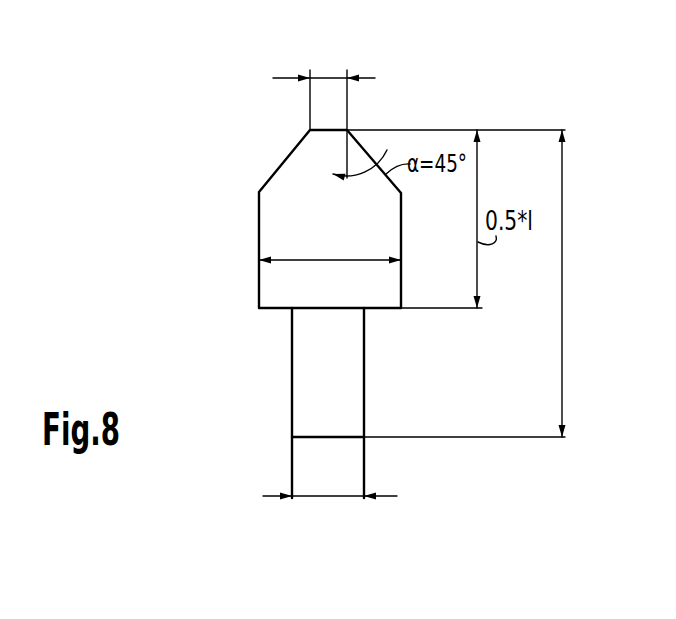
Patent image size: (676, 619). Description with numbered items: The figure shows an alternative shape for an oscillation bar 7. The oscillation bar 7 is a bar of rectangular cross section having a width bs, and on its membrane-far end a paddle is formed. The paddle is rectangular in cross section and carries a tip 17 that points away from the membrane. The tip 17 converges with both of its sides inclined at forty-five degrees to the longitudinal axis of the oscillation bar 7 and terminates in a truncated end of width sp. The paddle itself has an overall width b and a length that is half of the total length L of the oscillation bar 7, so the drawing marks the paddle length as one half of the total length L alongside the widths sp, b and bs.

The oscillation bar 7 is at (234, 295).
The tip 17 is at (268, 161).
The width of truncated end sp is at (330, 78).
The paddle width b is at (320, 260).
The bar width bs is at (326, 497).
The total length of oscillation bar L is at (562, 282).